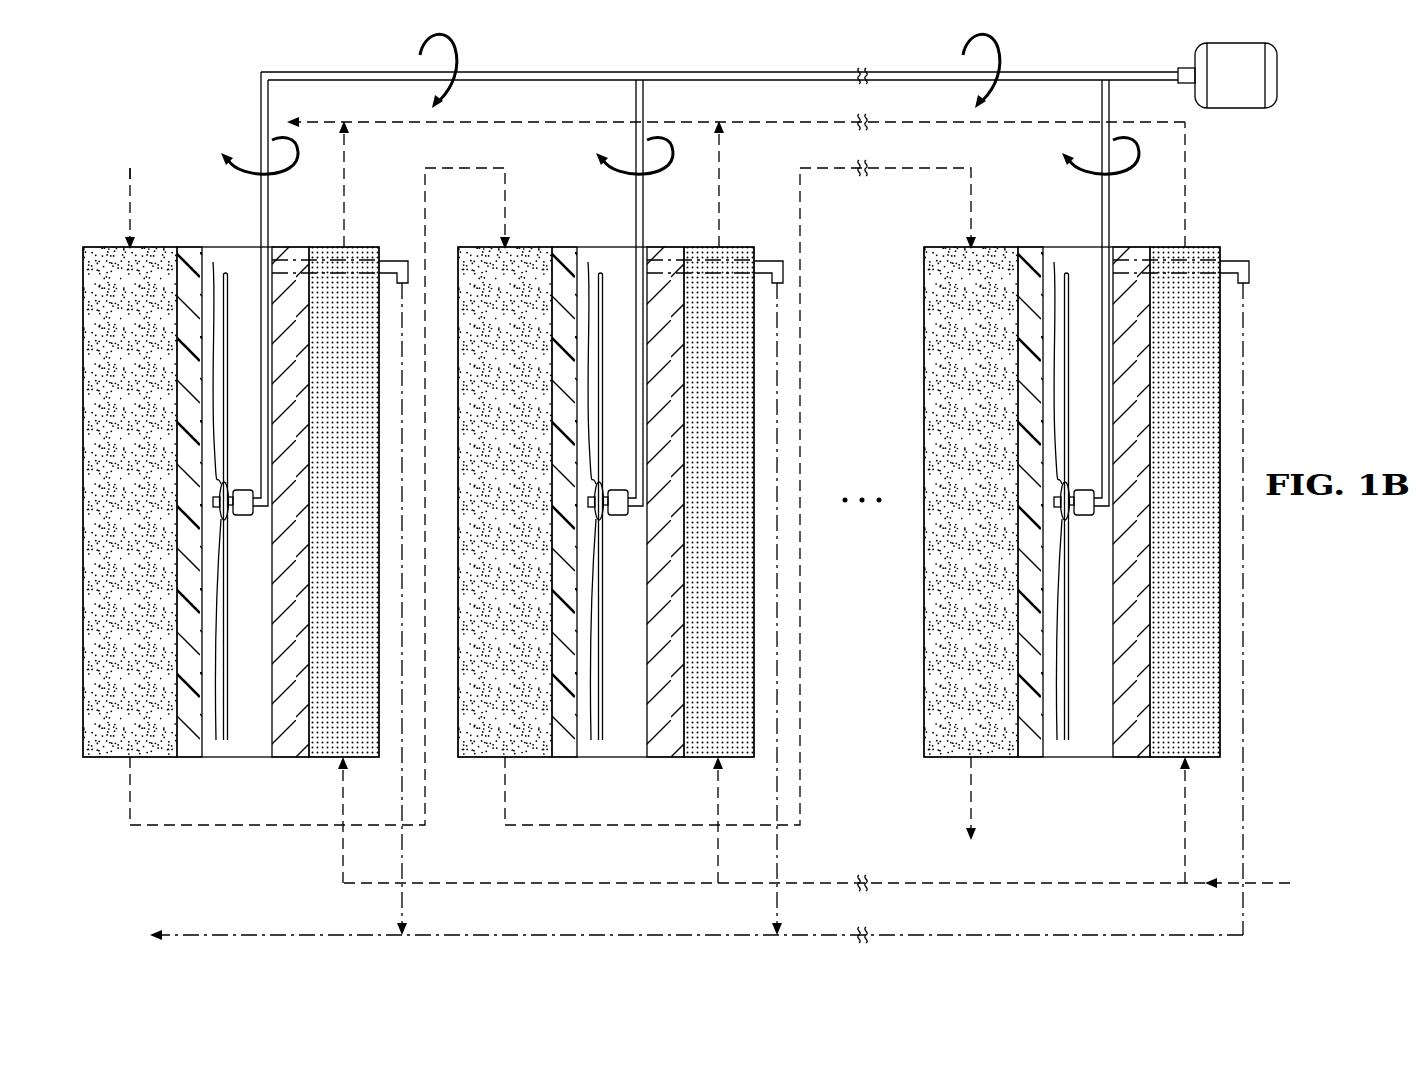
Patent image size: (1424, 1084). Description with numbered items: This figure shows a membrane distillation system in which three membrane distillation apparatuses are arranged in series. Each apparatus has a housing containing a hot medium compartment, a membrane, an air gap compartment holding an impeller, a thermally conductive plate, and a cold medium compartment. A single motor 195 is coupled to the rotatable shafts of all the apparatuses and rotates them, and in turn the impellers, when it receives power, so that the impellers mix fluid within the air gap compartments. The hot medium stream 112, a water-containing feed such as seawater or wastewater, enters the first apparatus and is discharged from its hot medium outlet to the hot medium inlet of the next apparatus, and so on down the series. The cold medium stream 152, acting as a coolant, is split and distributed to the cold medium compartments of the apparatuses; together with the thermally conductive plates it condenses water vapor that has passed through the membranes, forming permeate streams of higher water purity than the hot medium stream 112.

The hot medium stream 112 is at (134, 197).
The cold medium stream 152 is at (1268, 886).
The motor 195 is at (1281, 72).